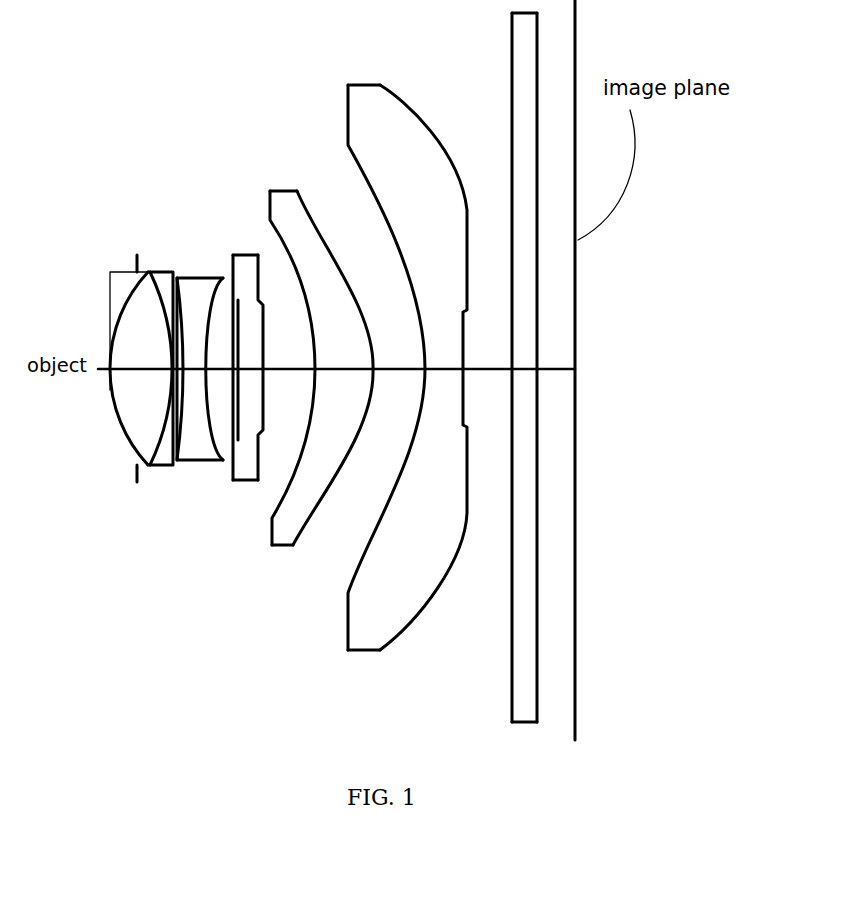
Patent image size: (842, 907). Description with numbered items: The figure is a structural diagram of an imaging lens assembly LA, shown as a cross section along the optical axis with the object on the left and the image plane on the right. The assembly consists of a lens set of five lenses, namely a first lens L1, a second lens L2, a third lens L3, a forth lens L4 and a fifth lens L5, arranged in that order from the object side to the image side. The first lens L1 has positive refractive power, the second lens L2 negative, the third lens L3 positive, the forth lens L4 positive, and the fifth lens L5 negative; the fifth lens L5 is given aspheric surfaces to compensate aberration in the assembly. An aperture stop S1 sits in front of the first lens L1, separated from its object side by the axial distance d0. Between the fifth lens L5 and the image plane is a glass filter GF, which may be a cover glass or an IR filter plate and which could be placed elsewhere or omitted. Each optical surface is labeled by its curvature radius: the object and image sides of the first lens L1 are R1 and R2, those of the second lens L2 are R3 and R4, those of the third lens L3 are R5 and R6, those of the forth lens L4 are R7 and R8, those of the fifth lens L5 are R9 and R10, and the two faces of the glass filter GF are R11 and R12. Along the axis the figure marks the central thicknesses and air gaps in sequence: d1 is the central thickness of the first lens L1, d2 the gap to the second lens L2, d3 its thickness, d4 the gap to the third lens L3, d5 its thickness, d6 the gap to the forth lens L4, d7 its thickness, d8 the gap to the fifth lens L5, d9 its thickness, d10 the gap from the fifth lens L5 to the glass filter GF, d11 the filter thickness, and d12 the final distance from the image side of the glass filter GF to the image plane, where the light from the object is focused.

The imaging lens assembly LA is at (150, 130).
The aperture stop S1 is at (133, 270).
The first lens L1 is at (117, 405).
The second lens L2 is at (180, 389).
The third lens L3 is at (230, 404).
The forth lens L4 is at (316, 392).
The fifth lens L5 is at (393, 395).
The glass filter GF is at (525, 203).
The curvature radius of the object side of the first lens R1 is at (112, 390).
The curvature radius of the image side of the first lens R2 is at (170, 384).
The curvature radius of the object side of the second lens R3 is at (180, 382).
The curvature radius of the image side of the second lens R4 is at (207, 382).
The curvature radius of the object side of the third lens R5 is at (237, 383).
The curvature radius of the image side of the third lens R6 is at (263, 383).
The curvature radius of the object side of the forth lens R7 is at (313, 398).
The curvature radius of the image side of the forth lens R8 is at (372, 398).
The curvature radius of the object side of the fifth lens R9 is at (405, 458).
The curvature radius of the image side of the fifth lens R10 is at (465, 437).
The curvature radius of the object side of the glass filter R11 is at (512, 575).
The curvature radius of the image side of the glass filter R12 is at (538, 575).
The axial distance between the aperture stop and the object side of the first lens d0 is at (130, 271).
The central thickness of the first lens d1 is at (141, 358).
The axial distance between the image side of the first lens and the object side of t d2 is at (173, 345).
The central thickness of the second lens d3 is at (192, 358).
The axial distance between the image side of the second lens and the object side of d4 is at (219, 358).
The central thickness of the third lens d5 is at (248, 358).
The axial distance between the image side of the third lens and the object side of t d6 is at (289, 358).
The central thickness of the forth lens d7 is at (344, 358).
The axial distance between the image side of the forth lens and the object side of t d8 is at (399, 358).
The central thickness of the fifth lens d9 is at (444, 358).
The axial distance between the image side of the fifth lens and the object side of t d10 is at (487, 358).
The central thickness of the glass filter d11 is at (515, 366).
The axial distance between the image side of the glass filter and the image plane d12 is at (556, 358).